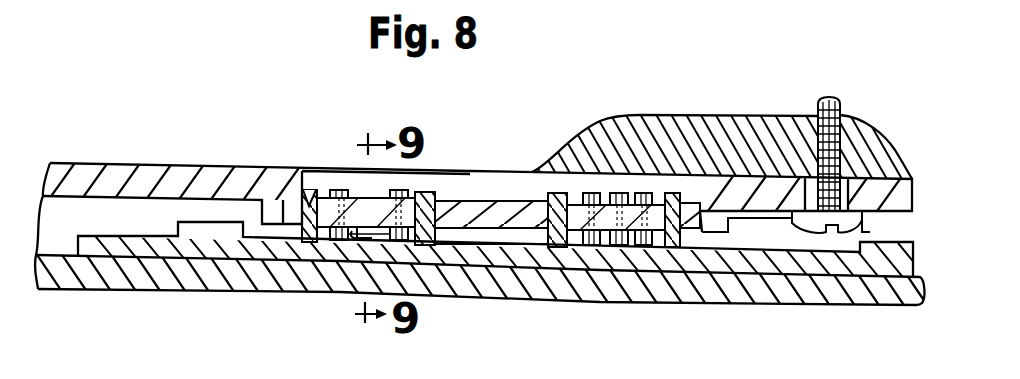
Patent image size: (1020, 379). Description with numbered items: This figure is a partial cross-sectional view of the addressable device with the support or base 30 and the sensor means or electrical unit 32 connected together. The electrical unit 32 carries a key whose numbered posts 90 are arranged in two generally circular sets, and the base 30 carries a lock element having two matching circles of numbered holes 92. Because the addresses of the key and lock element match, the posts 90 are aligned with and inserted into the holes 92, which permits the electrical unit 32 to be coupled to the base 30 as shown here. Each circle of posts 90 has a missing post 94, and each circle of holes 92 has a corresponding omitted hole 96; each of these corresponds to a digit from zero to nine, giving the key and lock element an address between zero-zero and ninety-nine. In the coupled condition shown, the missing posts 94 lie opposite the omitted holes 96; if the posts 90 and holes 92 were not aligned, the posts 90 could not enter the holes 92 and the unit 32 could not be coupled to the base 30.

The base 30 is at (110, 155).
The electrical unit 32 is at (115, 300).
The posts 90 is at (308, 204).
The holes 92 is at (316, 200).
The missing post 94 is at (362, 240).
The omitted hole 96 is at (356, 242).